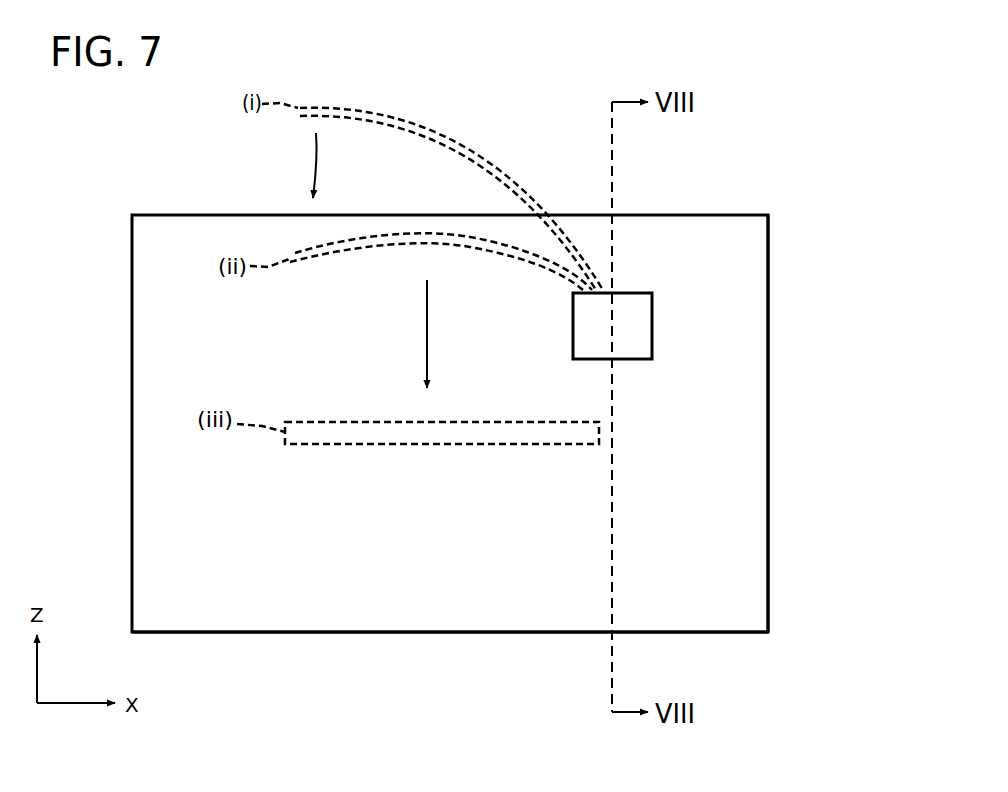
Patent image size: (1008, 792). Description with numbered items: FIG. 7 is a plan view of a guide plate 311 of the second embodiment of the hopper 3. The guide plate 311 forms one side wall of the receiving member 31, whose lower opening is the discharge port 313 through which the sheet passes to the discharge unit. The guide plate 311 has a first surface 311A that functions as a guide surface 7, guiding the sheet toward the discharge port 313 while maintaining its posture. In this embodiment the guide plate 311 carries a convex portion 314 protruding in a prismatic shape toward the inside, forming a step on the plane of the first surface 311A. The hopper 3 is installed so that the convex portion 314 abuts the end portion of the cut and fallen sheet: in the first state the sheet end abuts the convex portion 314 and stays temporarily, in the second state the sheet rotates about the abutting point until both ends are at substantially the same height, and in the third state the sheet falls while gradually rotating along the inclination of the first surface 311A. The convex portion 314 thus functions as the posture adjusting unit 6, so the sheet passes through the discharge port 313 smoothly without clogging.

The hopper 3 is at (828, 123).
The receiving member 31 is at (820, 257).
The guide plate 311 is at (776, 326).
The first surface 311A is at (824, 423).
The guide surface 7 is at (756, 463).
The discharge port 313 is at (715, 632).
The convex portion 314 is at (633, 261).
The posture adjusting unit 6 is at (630, 292).